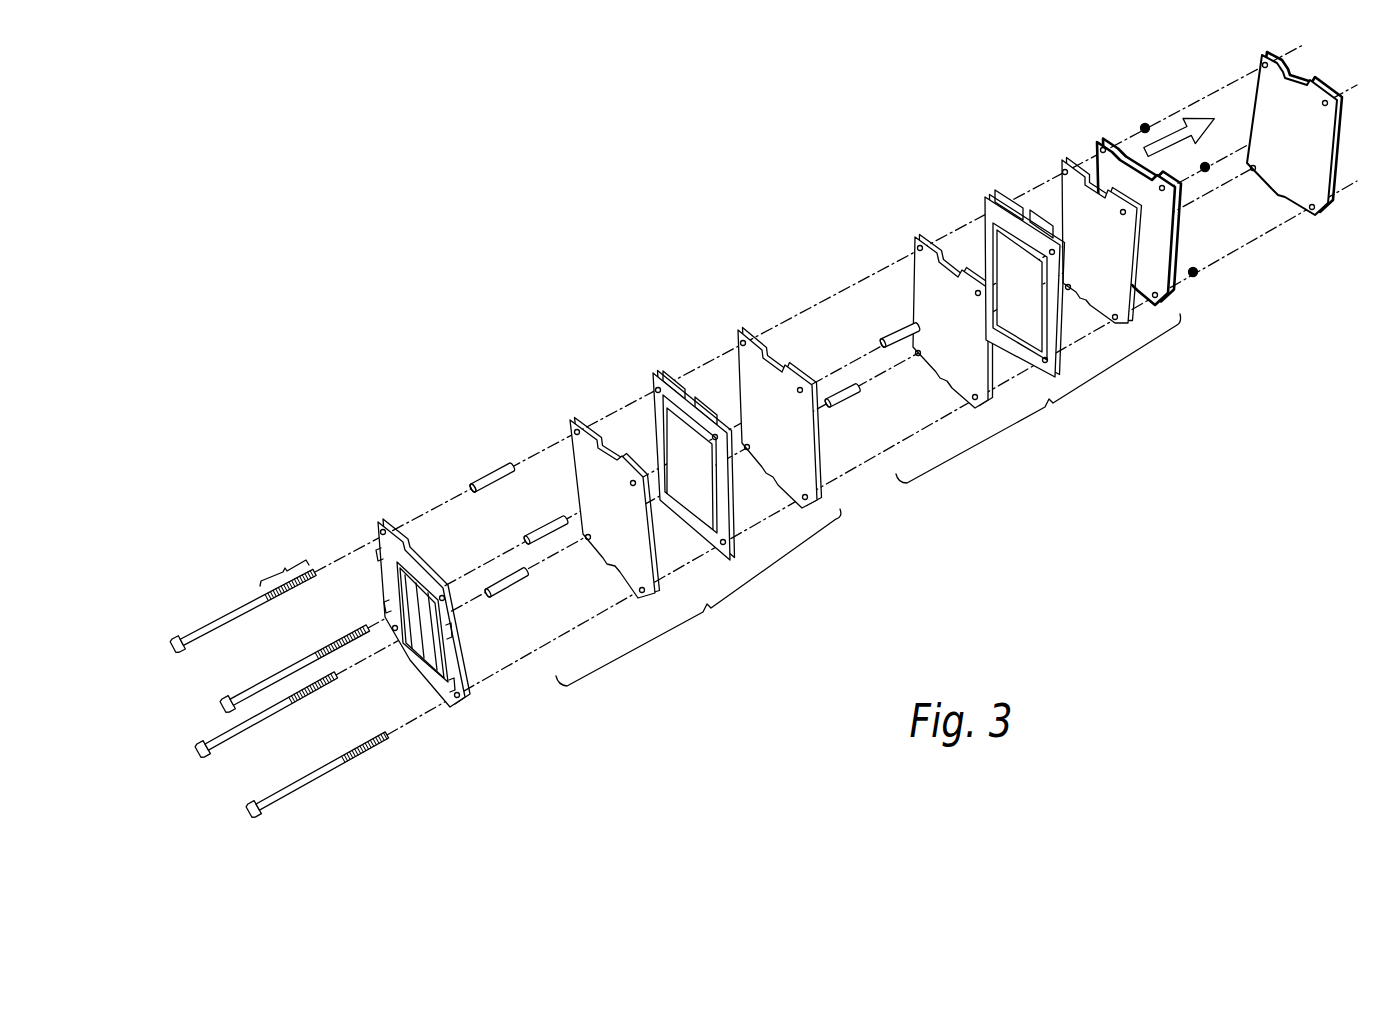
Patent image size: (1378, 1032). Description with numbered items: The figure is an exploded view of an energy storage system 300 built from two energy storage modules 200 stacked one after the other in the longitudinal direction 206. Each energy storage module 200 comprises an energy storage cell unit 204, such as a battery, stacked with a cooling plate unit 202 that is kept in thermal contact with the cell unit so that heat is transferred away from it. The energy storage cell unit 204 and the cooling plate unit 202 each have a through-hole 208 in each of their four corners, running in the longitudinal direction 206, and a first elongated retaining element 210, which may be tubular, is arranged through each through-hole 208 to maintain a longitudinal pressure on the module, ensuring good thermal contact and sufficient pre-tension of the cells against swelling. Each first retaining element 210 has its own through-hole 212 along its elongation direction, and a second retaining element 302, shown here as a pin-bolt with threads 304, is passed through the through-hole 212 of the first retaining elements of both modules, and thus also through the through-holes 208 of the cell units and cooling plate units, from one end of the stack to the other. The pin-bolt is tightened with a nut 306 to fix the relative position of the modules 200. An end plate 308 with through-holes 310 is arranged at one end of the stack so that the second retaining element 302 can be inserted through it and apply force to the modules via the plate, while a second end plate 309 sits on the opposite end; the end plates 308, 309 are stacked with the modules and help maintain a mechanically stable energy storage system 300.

The energy storage module 200 is at (868, 500).
The cooling plate unit 202 is at (583, 462).
The energy storage cell unit 204 is at (663, 372).
The longitudinal direction 206 is at (1190, 123).
The through-hole 208 is at (577, 432).
The first elongated retaining element 210 is at (492, 472).
The through-hole of the first retaining element 212 is at (472, 488).
The energy storage system 300 is at (674, 176).
The second retaining element 302 is at (218, 622).
The threads 304 is at (276, 564).
The nut 306 is at (1145, 126).
The end plate 308 is at (358, 501).
The second end plate 309 is at (1108, 138).
The through-holes of the end plate 310 is at (373, 540).